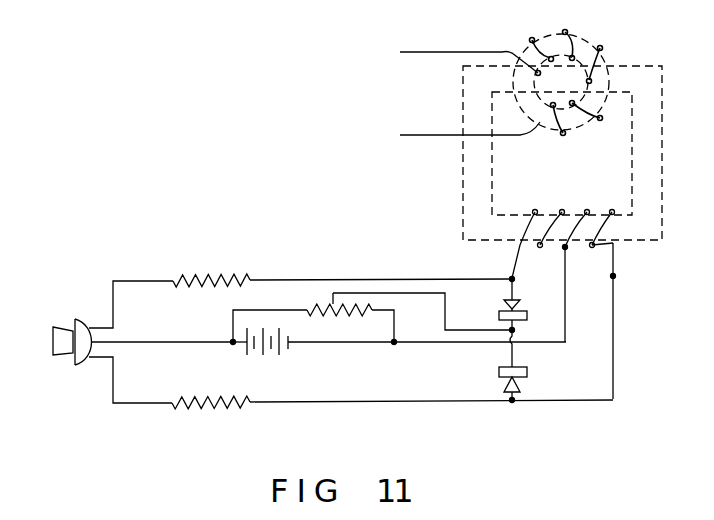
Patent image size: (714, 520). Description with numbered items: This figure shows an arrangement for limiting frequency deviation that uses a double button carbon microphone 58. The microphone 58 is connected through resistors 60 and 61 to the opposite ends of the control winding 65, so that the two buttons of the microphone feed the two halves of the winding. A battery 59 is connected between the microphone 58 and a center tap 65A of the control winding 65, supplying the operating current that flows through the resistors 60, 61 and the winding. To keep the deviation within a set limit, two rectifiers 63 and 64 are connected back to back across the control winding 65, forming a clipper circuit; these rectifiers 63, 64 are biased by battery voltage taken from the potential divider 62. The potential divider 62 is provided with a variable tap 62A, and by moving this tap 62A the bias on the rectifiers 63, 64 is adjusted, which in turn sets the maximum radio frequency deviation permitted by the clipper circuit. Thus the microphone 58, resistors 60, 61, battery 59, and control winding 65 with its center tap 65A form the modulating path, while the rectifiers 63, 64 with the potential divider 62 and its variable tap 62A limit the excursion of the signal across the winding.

The double button carbon microphone 58 is at (75, 320).
The battery 59 is at (270, 355).
The resistor 60 is at (213, 276).
The resistor 61 is at (224, 410).
The potential divider 62 is at (366, 311).
The variable tap 62A is at (330, 295).
The rectifier 63 is at (548, 304).
The rectifier 64 is at (529, 388).
The control winding 65 is at (561, 213).
The center tap 65A is at (568, 252).